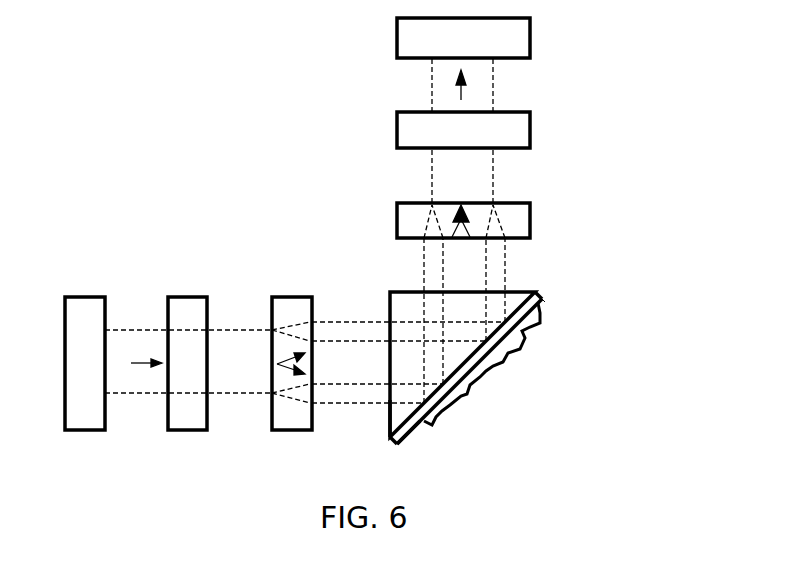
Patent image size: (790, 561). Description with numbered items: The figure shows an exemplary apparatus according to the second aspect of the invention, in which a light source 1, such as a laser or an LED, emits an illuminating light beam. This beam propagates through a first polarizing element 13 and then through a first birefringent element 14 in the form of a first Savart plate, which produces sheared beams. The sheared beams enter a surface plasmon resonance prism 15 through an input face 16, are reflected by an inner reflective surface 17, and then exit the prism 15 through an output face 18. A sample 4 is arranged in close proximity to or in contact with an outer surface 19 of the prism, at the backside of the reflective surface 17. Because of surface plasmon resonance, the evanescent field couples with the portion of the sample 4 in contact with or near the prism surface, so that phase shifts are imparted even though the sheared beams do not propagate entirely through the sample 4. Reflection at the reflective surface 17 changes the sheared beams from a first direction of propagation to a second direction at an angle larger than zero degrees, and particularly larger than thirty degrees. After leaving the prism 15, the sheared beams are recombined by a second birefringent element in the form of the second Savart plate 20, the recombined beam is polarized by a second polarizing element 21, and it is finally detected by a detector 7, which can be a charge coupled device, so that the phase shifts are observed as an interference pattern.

The light source 1 is at (95, 286).
The first polarizing element 13 is at (196, 286).
The first birefringent element 14 is at (304, 286).
The output face 18 is at (388, 290).
The inner reflective surface 17 is at (524, 290).
The input face 16 is at (386, 416).
The outer surface 19 is at (408, 438).
The sample 4 is at (510, 354).
The surface plasmon resonance prism 15 is at (546, 323).
The detector 7 is at (546, 35).
The second Savart plate 20 is at (546, 215).
The second polarizing element 21 is at (546, 123).